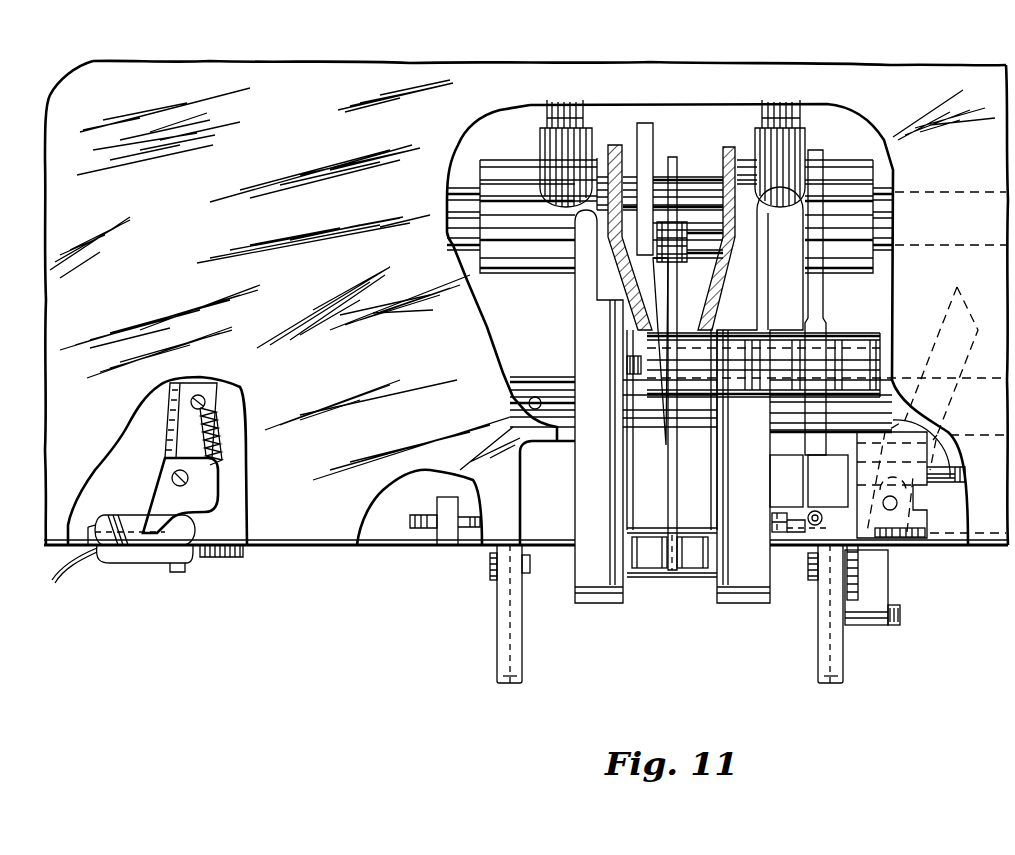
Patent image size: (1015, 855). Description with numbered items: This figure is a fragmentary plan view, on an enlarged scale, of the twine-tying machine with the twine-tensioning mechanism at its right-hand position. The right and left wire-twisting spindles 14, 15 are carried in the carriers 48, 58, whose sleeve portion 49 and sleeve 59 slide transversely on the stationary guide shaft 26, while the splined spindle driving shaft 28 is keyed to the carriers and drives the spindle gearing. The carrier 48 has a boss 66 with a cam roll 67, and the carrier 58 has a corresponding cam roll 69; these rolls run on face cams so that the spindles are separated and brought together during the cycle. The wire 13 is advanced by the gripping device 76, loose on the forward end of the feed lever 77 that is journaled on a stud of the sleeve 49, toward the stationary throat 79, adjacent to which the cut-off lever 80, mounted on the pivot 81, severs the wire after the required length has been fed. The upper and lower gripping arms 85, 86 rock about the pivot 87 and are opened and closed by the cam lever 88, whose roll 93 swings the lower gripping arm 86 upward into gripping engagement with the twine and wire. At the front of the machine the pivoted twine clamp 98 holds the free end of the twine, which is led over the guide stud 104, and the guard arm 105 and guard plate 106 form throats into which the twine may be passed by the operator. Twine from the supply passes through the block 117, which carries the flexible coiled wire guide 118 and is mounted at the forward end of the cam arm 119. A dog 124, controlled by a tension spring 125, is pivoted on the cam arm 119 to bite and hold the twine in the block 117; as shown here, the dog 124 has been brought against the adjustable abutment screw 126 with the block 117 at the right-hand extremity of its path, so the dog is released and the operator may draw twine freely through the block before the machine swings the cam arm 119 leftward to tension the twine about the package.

The wire 13 is at (957, 547).
The right spindle 14 is at (692, 579).
The left spindle 15 is at (648, 579).
The guide shaft 26 is at (470, 190).
The splined spindle driving shaft 28 is at (541, 380).
The carrier 48 is at (768, 583).
The sleeve portion 49 is at (850, 168).
The carrier 58 is at (583, 573).
The sleeve 59 is at (513, 162).
The boss 66 is at (800, 150).
The cam roll 67 is at (762, 122).
The cam roll 69 is at (540, 120).
The gripping device 76 is at (920, 525).
The feed lever 77 is at (940, 322).
The throat 79 is at (823, 524).
The cut-off lever 80 is at (823, 300).
The pivot 81 is at (880, 366).
The gripping arm 85 is at (680, 474).
The gripping arm 86 is at (660, 422).
The pivot 87 is at (627, 365).
The cam lever 88 is at (653, 132).
The roll 93 is at (690, 250).
The twine clamp 98 is at (887, 592).
The guide stud 104 is at (855, 572).
The guard arm 105 is at (836, 672).
The guard plate 106 is at (515, 672).
The block 117 is at (135, 550).
The flexible coiled wire guide 118 is at (228, 556).
The cam arm 119 is at (175, 445).
The dog 124 is at (160, 500).
The tension spring 125 is at (220, 458).
The adjustable abutment screw 126 is at (417, 517).